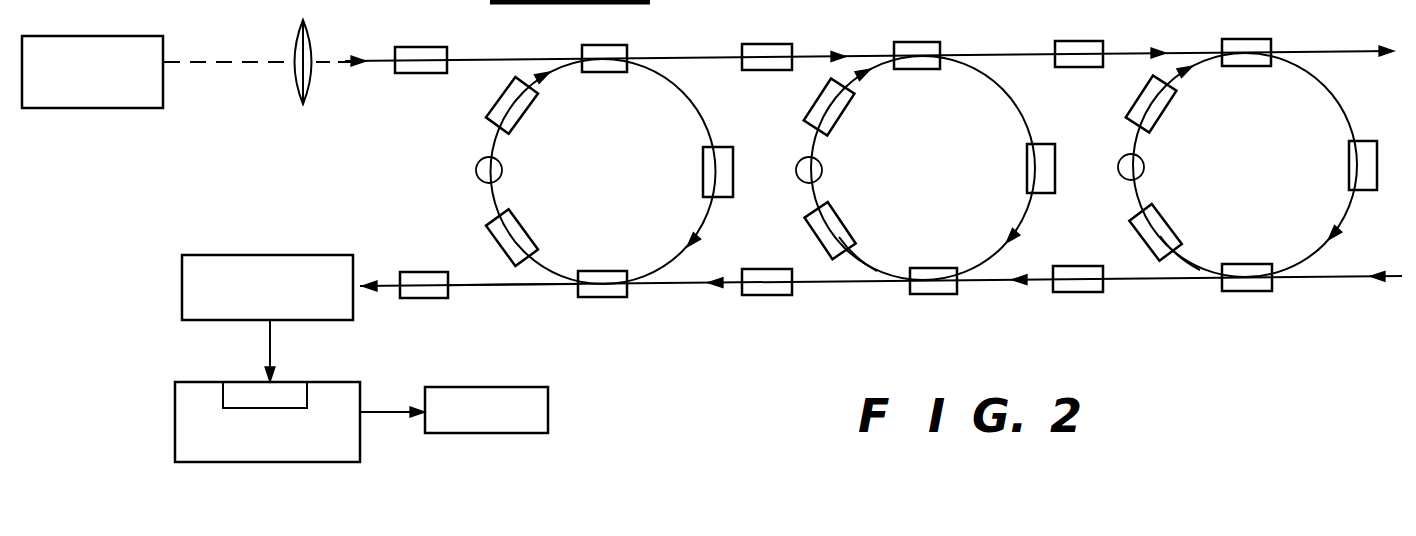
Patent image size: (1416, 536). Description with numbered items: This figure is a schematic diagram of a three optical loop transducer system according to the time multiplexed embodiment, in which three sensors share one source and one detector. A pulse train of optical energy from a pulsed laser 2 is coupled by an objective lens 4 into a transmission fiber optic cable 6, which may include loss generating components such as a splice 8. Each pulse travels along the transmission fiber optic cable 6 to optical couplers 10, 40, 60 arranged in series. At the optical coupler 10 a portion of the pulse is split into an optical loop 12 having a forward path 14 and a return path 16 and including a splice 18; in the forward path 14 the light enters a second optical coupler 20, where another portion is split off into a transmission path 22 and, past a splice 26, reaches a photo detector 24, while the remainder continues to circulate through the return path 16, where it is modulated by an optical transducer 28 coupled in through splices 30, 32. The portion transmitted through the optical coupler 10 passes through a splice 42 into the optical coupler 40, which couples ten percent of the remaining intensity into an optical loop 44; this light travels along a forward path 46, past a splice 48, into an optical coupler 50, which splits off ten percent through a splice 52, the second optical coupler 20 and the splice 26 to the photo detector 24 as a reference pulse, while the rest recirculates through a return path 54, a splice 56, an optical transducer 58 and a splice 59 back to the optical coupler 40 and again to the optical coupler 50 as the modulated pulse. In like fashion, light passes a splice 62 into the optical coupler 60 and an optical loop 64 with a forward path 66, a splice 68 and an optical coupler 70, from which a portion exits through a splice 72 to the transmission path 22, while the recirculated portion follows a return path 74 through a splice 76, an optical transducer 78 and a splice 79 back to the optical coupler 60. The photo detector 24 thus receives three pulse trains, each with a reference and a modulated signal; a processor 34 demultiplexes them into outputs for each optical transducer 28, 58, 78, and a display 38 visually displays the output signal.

The pulsed laser 2 is at (122, 35).
The objective lens 4 is at (310, 25).
The transmission fiber optic cable 6 is at (378, 55).
The splice 8 is at (450, 50).
The optical coupler 10 is at (628, 47).
The optical loop 12 is at (625, 171).
The forward path 14 is at (706, 109).
The return path 16 is at (545, 275).
The splice 18 is at (703, 147).
The second optical coupler 20 is at (628, 298).
The transmission path 22 is at (498, 284).
The photo detector 24 is at (182, 275).
The splice 26 is at (428, 300).
The optical transducer 28 is at (501, 165).
The splice 30 is at (492, 227).
The splice 32 is at (498, 113).
The processor 34 is at (177, 390).
The display 38 is at (520, 387).
The optical coupler 40 is at (933, 43).
The splice 42 is at (768, 47).
The optical loop 44 is at (923, 168).
The forward path 46 is at (993, 80).
The splice 48 is at (1025, 183).
The optical coupler 50 is at (917, 295).
The splice 52 is at (760, 296).
The return path 54 is at (875, 272).
The splice 56 is at (840, 213).
The optical transducer 58 is at (822, 170).
The splice 59 is at (852, 103).
The optical coupler 60 is at (1260, 38).
The splice 62 is at (1083, 43).
The optical loop 64 is at (1245, 165).
The forward path 66 is at (1317, 77).
The splice 68 is at (1377, 141).
The optical coupler 70 is at (1253, 292).
The splice 72 is at (1087, 293).
The return path 74 is at (1190, 262).
The splice 76 is at (1163, 222).
The optical transducer 78 is at (1142, 163).
The splice 79 is at (1172, 102).